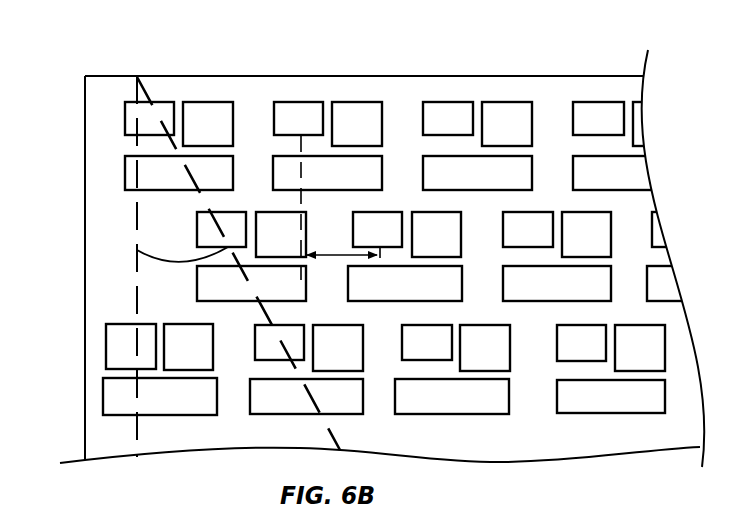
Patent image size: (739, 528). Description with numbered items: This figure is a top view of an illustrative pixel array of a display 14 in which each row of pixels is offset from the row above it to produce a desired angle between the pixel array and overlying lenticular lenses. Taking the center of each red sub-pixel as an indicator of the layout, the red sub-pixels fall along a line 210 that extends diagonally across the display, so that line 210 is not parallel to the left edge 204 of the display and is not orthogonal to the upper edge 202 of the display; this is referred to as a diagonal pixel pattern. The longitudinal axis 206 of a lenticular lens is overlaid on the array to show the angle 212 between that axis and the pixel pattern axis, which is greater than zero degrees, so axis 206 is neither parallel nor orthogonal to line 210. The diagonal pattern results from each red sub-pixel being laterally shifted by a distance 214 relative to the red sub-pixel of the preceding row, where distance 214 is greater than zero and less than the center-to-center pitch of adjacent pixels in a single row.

The display 14 is at (44, 135).
The upper edge 202 is at (532, 76).
The left edge 204 is at (85, 343).
The longitudinal axis 206 is at (137, 203).
The line 210 is at (137, 77).
The angle 212 is at (174, 262).
The distance 214 is at (342, 258).